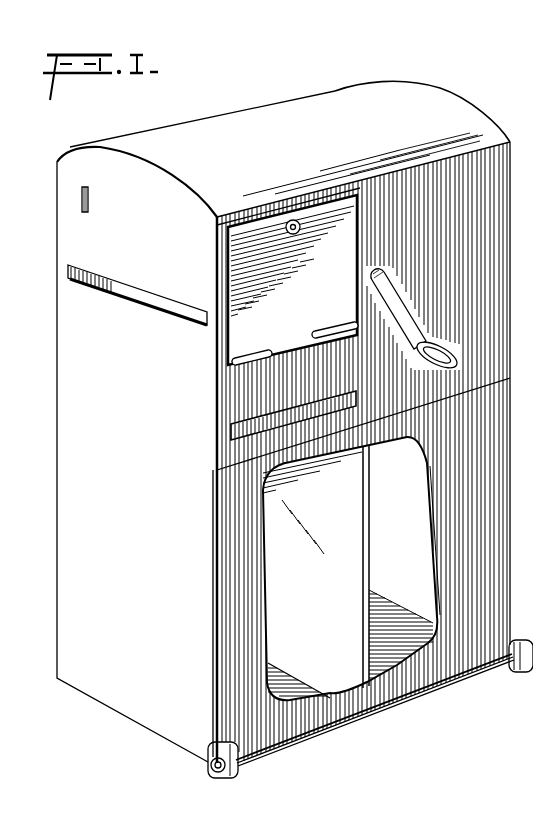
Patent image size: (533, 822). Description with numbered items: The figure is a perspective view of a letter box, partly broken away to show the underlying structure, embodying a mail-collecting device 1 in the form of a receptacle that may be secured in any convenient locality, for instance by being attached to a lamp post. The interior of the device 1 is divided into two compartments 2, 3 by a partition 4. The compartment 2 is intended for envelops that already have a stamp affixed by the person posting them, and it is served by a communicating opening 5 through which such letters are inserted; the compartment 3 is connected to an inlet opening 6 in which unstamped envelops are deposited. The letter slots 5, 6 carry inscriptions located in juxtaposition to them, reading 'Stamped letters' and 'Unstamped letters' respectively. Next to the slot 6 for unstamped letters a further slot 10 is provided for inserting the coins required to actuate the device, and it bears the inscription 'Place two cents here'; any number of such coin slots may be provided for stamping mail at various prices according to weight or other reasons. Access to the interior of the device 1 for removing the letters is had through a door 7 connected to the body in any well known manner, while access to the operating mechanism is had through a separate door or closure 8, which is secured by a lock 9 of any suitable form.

The mail-collecting device 1 is at (467, 115).
The compartment 2 is at (277, 610).
The compartment 3 is at (413, 567).
The partition 4 is at (368, 531).
The communicating opening 5 is at (217, 446).
The inlet opening 6 is at (197, 315).
The door 7 is at (237, 507).
The door or closure 8 is at (328, 233).
The lock 9 is at (293, 220).
The slot 10 is at (88, 193).